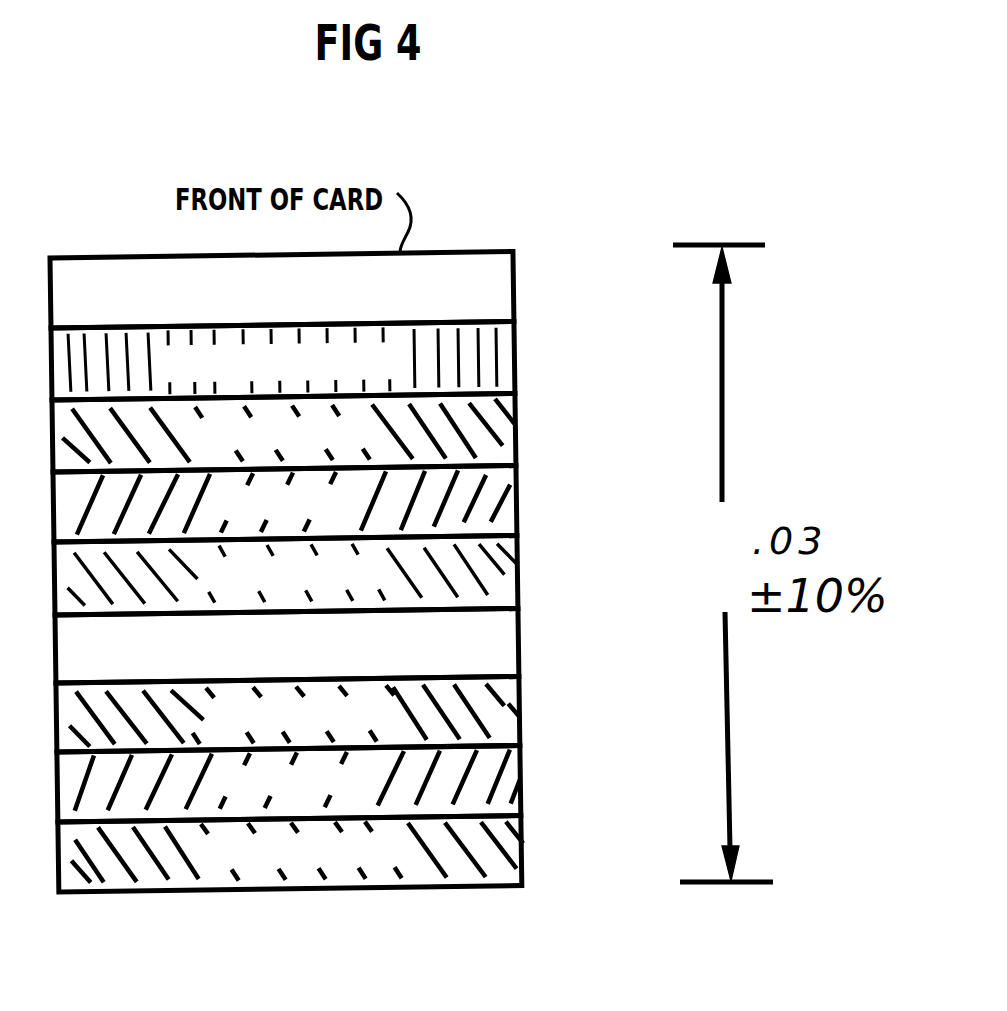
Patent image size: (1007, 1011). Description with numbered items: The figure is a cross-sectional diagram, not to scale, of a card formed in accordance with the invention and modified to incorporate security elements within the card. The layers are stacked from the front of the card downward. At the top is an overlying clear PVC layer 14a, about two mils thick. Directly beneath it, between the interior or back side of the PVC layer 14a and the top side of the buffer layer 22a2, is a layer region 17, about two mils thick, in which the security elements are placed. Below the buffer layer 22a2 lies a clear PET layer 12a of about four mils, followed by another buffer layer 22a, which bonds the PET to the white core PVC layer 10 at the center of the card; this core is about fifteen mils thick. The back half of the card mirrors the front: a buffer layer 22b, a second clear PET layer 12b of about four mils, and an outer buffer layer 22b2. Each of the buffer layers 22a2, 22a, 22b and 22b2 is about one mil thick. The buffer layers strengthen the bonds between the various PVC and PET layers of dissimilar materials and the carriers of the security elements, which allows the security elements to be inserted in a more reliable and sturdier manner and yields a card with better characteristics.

The PVC layer 14a is at (517, 290).
The security element layer 17 is at (517, 363).
The buffer layer 22a2 is at (517, 430).
The PET layer 12a is at (517, 498).
The buffer layer 22a is at (517, 572).
The core PVC layer 10 is at (517, 645).
The buffer layer 22b is at (517, 713).
The PET layer 12b is at (517, 778).
The buffer layer 22b2 is at (517, 845).